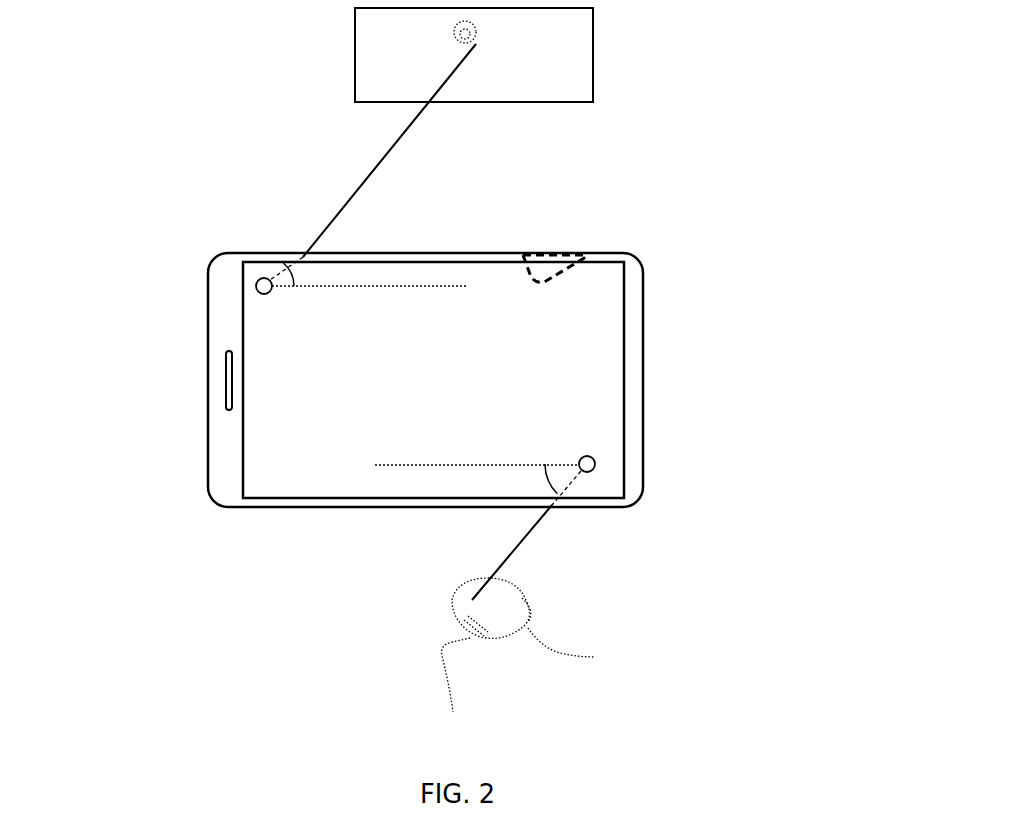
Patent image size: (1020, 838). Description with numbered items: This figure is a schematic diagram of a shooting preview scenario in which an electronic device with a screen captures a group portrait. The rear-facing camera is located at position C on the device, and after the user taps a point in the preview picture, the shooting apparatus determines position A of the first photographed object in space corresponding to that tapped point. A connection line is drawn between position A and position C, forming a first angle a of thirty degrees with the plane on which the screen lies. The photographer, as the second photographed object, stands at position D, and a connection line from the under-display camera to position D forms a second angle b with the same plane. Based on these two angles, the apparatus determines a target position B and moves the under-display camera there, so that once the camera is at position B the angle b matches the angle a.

The position A is at (431, 144).
The position B is at (623, 448).
The position C is at (260, 255).
The position D is at (577, 608).